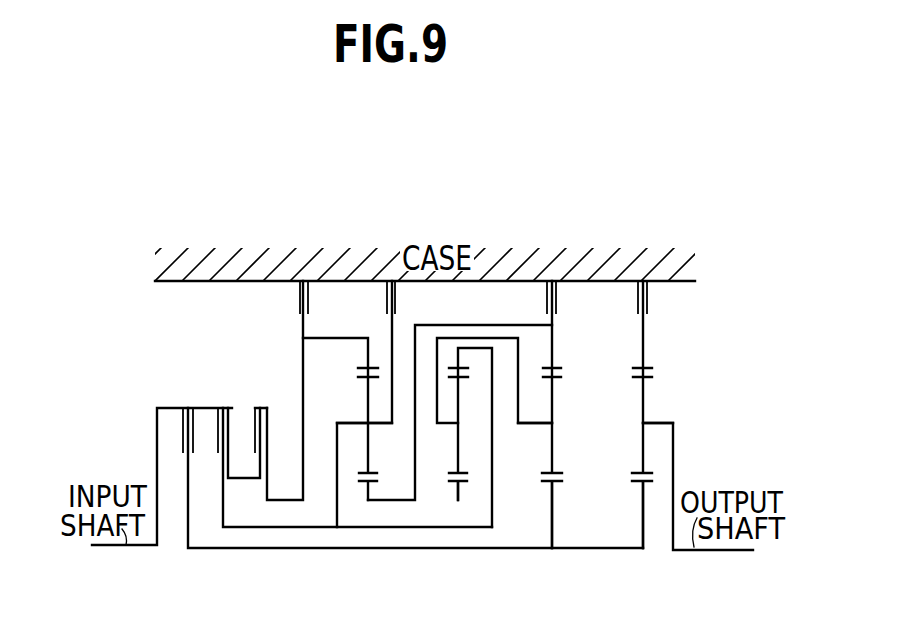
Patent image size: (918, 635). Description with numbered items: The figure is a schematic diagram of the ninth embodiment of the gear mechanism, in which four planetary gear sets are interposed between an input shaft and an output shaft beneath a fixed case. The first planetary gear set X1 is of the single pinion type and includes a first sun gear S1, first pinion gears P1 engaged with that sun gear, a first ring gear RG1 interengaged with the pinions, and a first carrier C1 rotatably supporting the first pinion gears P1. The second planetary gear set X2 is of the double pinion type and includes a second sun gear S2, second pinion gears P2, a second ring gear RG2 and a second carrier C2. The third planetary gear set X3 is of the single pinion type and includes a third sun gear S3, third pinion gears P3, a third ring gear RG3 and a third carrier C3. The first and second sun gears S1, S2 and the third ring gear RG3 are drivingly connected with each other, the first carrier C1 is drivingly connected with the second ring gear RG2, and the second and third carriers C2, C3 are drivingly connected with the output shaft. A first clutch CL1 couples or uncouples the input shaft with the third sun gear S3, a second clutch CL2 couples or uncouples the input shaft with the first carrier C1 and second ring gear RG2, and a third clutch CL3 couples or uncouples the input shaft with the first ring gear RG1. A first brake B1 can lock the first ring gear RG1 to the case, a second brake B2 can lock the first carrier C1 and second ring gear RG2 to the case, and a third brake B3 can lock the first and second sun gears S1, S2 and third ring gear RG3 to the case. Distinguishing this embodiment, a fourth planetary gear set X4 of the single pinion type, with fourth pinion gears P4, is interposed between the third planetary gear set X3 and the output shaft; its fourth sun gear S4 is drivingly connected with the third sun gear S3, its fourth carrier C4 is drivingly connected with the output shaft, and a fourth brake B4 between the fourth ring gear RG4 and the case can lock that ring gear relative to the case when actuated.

The first clutch CL1 is at (184, 408).
The second clutch CL2 is at (222, 408).
The third clutch CL3 is at (262, 408).
The first brake B1 is at (283, 297).
The second brake B2 is at (388, 404).
The third brake B3 is at (572, 414).
The fourth brake B4 is at (664, 414).
The first ring gear RG1 is at (368, 362).
The second ring gear RG2 is at (460, 353).
The third ring gear RG3 is at (552, 358).
The fourth ring gear RG4 is at (645, 358).
The first carrier C1 is at (358, 423).
The second carrier C2 is at (446, 424).
The third carrier C3 is at (556, 424).
The fourth carrier C4 is at (652, 424).
The first pinion gears P1 is at (368, 464).
The second pinion gears P2 is at (458, 464).
The third pinion gears P3 is at (552, 464).
The fourth pinion gears P4 is at (643, 464).
The first sun gear S1 is at (370, 488).
The second sun gear S2 is at (462, 488).
The third sun gear S3 is at (554, 497).
The fourth sun gear S4 is at (645, 497).
The first planetary gear set X1 is at (355, 490).
The second planetary gear set X2 is at (448, 490).
The third planetary gear set X3 is at (542, 490).
The fourth planetary gear set X4 is at (632, 490).